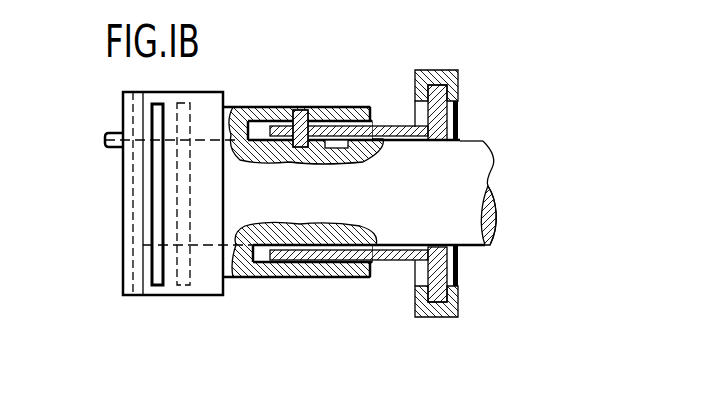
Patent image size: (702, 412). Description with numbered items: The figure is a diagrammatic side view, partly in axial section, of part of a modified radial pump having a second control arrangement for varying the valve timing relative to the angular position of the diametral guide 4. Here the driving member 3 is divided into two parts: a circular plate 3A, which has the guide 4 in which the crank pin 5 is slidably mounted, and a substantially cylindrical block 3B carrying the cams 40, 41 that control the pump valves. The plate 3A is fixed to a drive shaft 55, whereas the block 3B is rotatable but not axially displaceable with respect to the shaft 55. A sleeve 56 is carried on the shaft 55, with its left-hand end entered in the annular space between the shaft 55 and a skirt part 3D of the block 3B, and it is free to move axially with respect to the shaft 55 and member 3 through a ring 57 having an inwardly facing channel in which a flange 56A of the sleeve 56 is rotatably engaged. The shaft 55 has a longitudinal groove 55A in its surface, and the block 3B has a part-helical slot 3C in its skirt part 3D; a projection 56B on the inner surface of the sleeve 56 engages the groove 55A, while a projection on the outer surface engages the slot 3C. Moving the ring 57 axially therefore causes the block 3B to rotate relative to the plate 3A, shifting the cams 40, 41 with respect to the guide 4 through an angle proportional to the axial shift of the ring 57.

The driving member 3 is at (216, 297).
The circular plate 3A is at (138, 297).
The cylindrical block 3B is at (172, 290).
The part-helical slot 3C is at (290, 107).
The skirt part 3D is at (306, 278).
The diametral guide 4 is at (127, 199).
The crank pin 5 is at (113, 135).
The cam 40 is at (197, 102).
The cam 41 is at (158, 286).
The drive shaft 55 is at (483, 163).
The longitudinal groove 55A is at (345, 148).
The sleeve 56 is at (392, 262).
The flange 56A is at (442, 112).
The projection 56B is at (304, 148).
The ring 57 is at (433, 70).